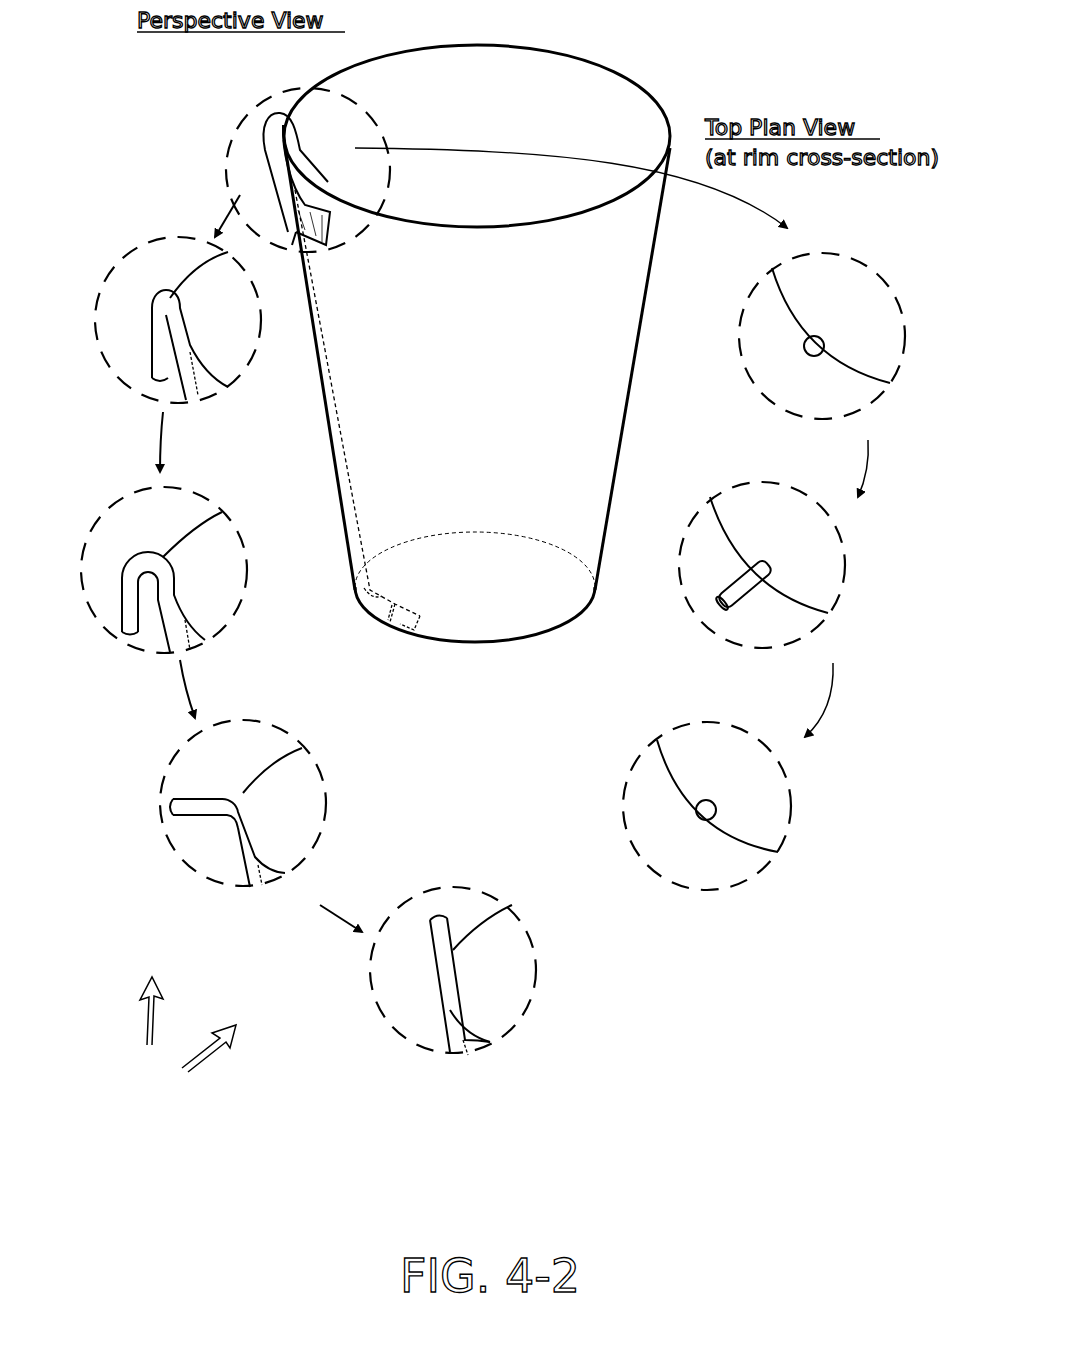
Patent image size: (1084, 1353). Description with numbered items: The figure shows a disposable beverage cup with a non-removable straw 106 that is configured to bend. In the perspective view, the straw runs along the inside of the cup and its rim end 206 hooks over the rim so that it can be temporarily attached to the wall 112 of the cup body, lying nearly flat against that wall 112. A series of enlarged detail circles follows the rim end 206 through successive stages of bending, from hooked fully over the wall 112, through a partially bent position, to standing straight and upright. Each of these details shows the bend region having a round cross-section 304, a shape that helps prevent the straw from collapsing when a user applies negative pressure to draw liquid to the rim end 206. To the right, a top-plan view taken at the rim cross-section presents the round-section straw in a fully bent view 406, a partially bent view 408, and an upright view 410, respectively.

The non-removable straw 106 is at (330, 316).
The wall 112 is at (805, 347).
The rim end 206 is at (436, 913).
The round cross-section 304 is at (118, 1142).
The fully bent view 406 is at (855, 451).
The partially bent view 408 is at (820, 676).
The upright view 410 is at (803, 926).